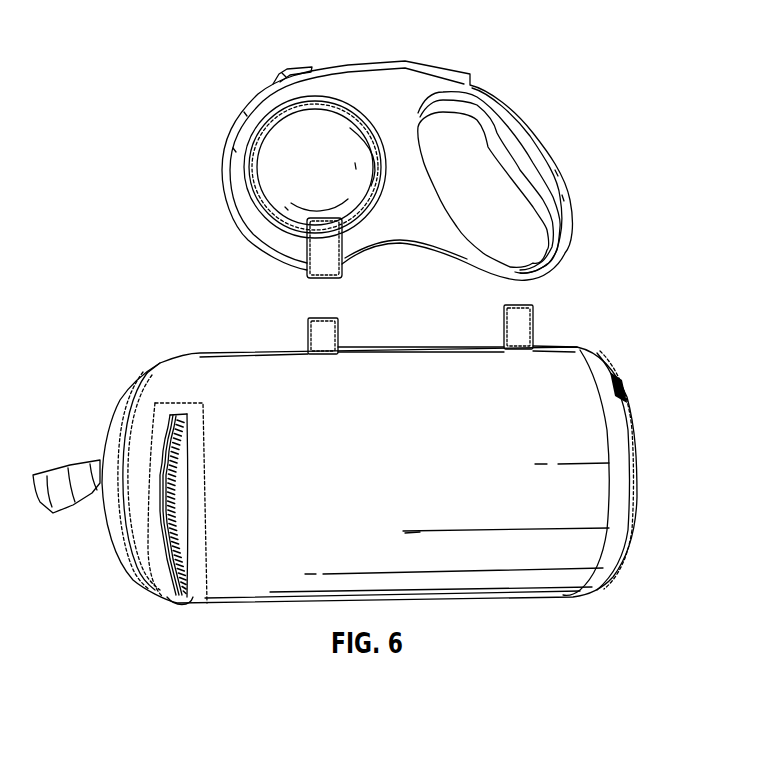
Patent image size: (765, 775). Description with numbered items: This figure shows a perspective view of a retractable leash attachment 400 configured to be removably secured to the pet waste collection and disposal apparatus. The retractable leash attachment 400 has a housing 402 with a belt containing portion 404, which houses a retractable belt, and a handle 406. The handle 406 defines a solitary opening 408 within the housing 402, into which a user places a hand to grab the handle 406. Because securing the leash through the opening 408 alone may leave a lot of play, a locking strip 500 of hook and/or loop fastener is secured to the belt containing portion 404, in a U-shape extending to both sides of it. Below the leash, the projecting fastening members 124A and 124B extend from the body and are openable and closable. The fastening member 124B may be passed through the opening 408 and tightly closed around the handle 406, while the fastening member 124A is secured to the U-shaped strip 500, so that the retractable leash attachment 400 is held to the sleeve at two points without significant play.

The retractable leash attachment 400 is at (233, 85).
The housing 402 is at (505, 106).
The belt containing portion 404 is at (208, 186).
The handle 406 is at (573, 176).
The opening 408 is at (488, 240).
The locking strip 500 is at (346, 270).
The fastening member 124A is at (307, 336).
The fastening member 124B is at (534, 327).